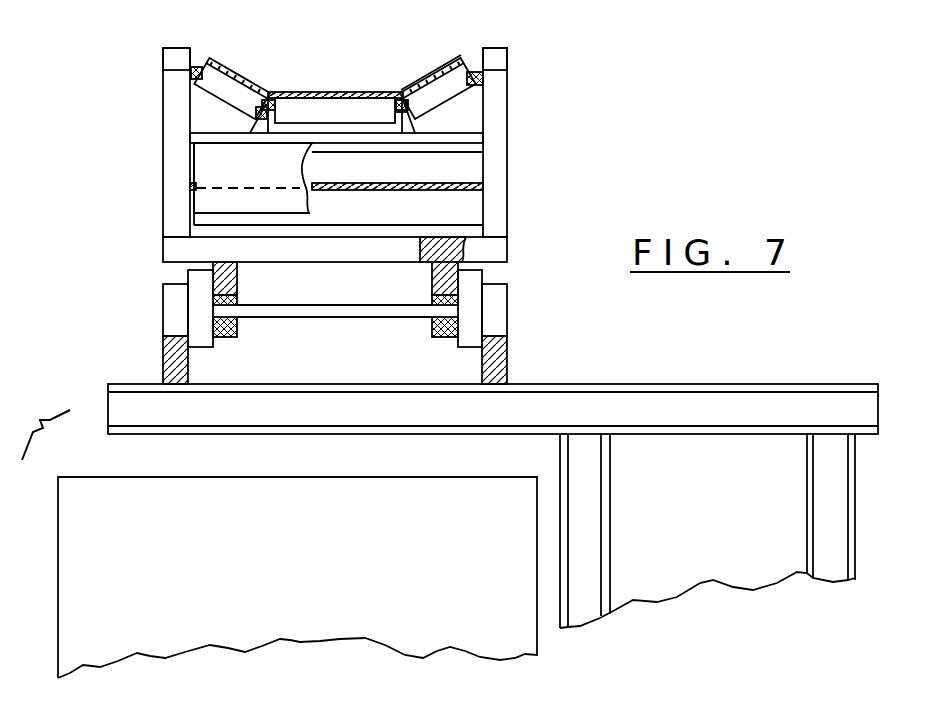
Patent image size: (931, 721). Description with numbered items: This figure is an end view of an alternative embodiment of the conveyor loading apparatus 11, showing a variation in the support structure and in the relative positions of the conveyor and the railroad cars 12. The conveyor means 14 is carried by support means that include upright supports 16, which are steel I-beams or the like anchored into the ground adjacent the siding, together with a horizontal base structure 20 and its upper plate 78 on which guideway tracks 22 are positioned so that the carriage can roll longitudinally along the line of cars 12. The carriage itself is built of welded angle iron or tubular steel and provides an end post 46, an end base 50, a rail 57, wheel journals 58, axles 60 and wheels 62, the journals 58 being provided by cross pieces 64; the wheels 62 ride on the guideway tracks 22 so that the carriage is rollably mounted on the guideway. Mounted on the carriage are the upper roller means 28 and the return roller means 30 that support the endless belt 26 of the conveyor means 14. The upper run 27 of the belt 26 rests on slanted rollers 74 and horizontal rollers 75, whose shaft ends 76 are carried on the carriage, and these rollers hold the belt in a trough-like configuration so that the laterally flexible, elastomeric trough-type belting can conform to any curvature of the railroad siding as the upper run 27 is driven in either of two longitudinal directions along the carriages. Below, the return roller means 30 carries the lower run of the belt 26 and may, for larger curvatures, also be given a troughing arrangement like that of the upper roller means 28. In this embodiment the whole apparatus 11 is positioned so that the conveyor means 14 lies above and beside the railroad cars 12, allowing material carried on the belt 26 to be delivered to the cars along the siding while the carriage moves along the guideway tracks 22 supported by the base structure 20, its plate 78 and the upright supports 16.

The loading apparatus 11 is at (572, 169).
The railroad cars 12 is at (58, 578).
The conveyor means 14 is at (339, 57).
The upright supports 16 is at (610, 498).
The base frame 20 is at (878, 402).
The guideway tracks 22 is at (163, 350).
The endless belt 26 is at (423, 76).
The upper run of the belt 27 is at (293, 92).
The upper roller means 28 is at (220, 110).
The return roller means 30 is at (462, 208).
The end post 46 is at (163, 100).
The end base 50 is at (320, 262).
The rail 57 is at (190, 66).
The wheel journals 58 is at (238, 276).
The axles 60 is at (356, 318).
The wheels 62 is at (163, 312).
The cross pieces 64 is at (442, 240).
The slanted rollers 74 is at (238, 94).
The horizontal rollers 75 is at (340, 122).
The roller shaft ends 76 is at (414, 130).
The base plate 78 is at (602, 386).